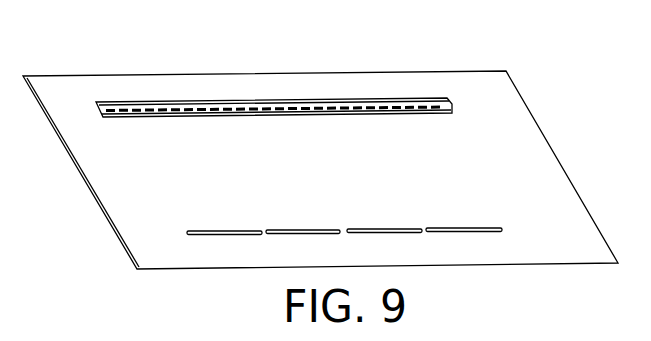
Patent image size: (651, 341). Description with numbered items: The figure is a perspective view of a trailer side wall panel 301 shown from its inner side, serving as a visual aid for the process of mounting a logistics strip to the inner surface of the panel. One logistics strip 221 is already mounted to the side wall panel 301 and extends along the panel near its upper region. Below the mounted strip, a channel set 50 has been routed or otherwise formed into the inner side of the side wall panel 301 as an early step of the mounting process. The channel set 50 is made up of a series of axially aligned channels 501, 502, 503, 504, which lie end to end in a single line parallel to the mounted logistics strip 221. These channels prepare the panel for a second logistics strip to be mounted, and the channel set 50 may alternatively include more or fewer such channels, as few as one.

The logistics strip 221 is at (129, 103).
The side wall panel 301 is at (518, 135).
The channel set 50 is at (408, 204).
The channel 501 is at (226, 231).
The channel 502 is at (303, 230).
The channel 503 is at (381, 229).
The channel 504 is at (468, 202).